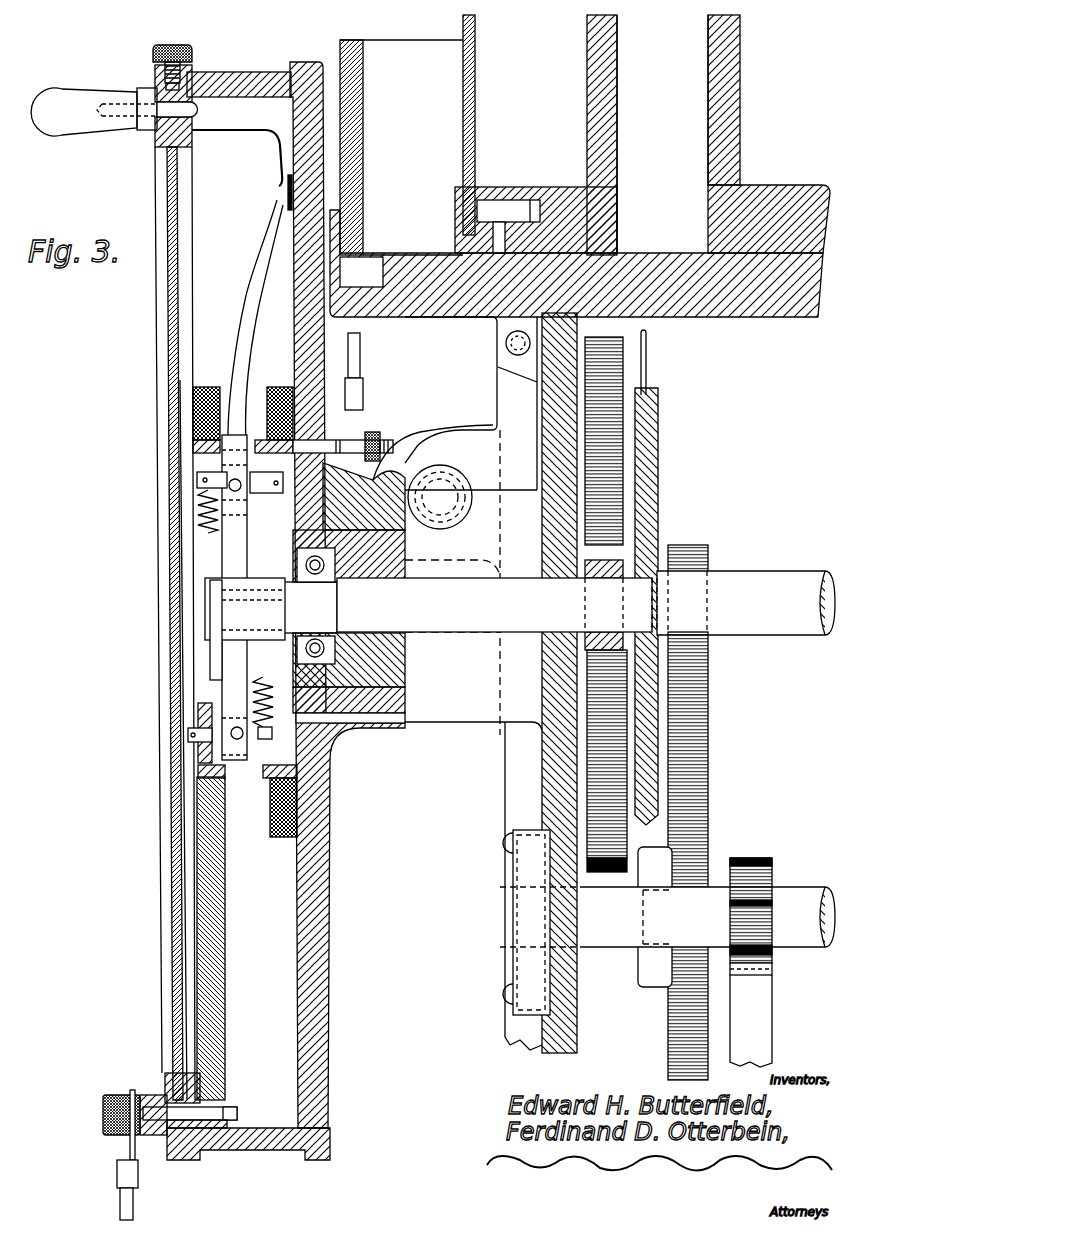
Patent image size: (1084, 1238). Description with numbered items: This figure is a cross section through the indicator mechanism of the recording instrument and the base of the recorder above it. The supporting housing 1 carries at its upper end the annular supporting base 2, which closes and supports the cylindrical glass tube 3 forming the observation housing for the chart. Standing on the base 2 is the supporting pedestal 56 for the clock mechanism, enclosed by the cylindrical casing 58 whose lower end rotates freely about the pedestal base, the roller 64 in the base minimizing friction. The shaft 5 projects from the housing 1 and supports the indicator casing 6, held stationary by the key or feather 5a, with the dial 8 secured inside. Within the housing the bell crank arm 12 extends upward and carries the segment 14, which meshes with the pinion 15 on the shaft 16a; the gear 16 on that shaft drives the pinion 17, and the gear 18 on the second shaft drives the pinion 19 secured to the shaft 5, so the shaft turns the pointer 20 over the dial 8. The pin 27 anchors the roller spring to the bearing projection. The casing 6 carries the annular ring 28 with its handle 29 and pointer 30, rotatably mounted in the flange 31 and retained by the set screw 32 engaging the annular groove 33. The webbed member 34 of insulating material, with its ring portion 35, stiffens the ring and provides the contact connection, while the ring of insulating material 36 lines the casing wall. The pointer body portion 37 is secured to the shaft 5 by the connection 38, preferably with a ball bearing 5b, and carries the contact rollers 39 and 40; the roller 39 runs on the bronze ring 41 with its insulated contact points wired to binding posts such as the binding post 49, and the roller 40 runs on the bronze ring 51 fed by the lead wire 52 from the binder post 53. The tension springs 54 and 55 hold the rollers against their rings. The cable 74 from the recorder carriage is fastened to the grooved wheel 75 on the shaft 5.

The supporting housing 1 is at (502, 798).
The annular supporting base 2 is at (765, 308).
The cylindrical glass tube 3 is at (362, 114).
The shaft 5 is at (395, 612).
The key or feather 5a is at (390, 724).
The ball bearing 5b is at (322, 640).
The indicator casing 6 is at (298, 64).
The dial 8 is at (286, 192).
The bell crank lever arm 12 is at (764, 1022).
The segment 14 is at (772, 969).
The pinion 15 is at (770, 867).
The gear 16 is at (670, 1022).
The shaft 16a is at (842, 888).
The pinion 17 is at (707, 553).
The gear 18 is at (602, 873).
The pinion 19 is at (587, 580).
The pointer 20 is at (262, 283).
The pin 27 is at (512, 896).
The annular ring 28 is at (162, 128).
The handle 29 is at (52, 92).
The pointer 30 is at (273, 166).
The flange 31 is at (190, 68).
The set screw 32 is at (162, 46).
The annular groove 33 is at (160, 86).
The webbed member 34 is at (198, 886).
The ring portion 35 is at (193, 400).
The ring of insulating material 36 is at (280, 387).
The body portion 37 is at (232, 538).
The connection 38 is at (208, 636).
The contact roller 39 is at (200, 740).
The contact roller 40 is at (279, 495).
The bronze ring 41 is at (200, 770).
The binding post 49 is at (152, 1100).
The bronze ring 51 is at (262, 440).
The lead wire 52 is at (358, 370).
The binder post 53 is at (372, 470).
The tension spring 54 is at (208, 513).
The tension spring 55 is at (263, 745).
The supporting pedestal 56 is at (594, 108).
The cylindrical casing 58 is at (484, 136).
The roller 64 is at (500, 205).
The cable 74 is at (646, 366).
The grooved wheel 75 is at (660, 426).